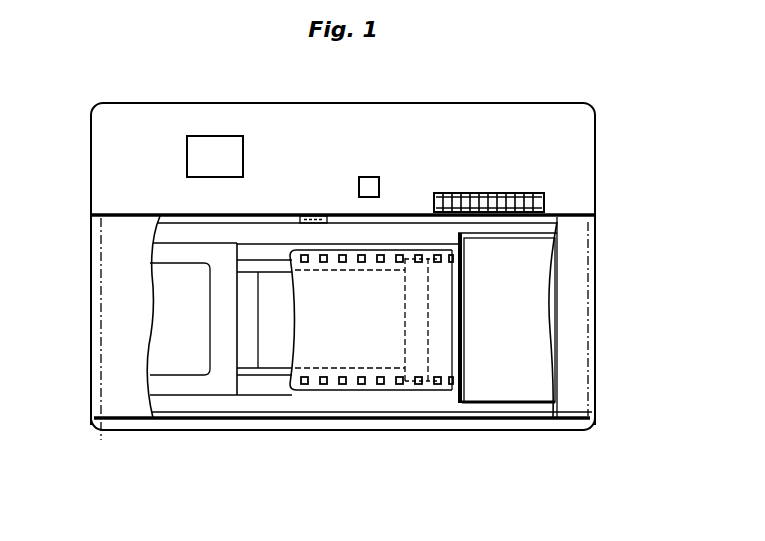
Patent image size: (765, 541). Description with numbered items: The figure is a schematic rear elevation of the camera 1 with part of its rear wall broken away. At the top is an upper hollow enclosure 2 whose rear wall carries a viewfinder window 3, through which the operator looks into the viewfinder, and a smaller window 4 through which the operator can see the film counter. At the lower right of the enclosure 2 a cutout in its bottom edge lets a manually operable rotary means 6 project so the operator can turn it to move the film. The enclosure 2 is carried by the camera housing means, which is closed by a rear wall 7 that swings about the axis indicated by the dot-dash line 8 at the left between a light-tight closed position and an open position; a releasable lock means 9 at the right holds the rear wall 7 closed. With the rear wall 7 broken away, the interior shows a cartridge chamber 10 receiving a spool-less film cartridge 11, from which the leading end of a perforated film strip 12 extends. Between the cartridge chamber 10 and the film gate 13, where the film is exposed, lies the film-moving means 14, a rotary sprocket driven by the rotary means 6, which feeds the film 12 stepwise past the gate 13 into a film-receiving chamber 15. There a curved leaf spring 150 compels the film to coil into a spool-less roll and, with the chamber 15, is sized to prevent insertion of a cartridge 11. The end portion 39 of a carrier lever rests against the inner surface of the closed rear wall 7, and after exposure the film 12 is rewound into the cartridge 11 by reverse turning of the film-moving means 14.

The camera 1 is at (428, 96).
The upper hollow enclosure 2 is at (264, 115).
The viewfinder window 3 is at (202, 150).
The window 4 is at (369, 187).
The manually operable rotary means 6 is at (545, 203).
The rear wall 7 is at (118, 362).
The dot-dash line 8 is at (93, 245).
The releasable lock means 9 is at (597, 280).
The cartridge chamber 10 is at (463, 400).
The spool-less film cartridge 11 is at (521, 390).
The perforated film strip 12 is at (323, 350).
The film gate 13 is at (278, 355).
The film-moving means 14 is at (417, 350).
The film-receiving chamber 15 is at (221, 385).
The end portion of the carrier 39 is at (310, 214).
The leaf spring 150 is at (178, 358).